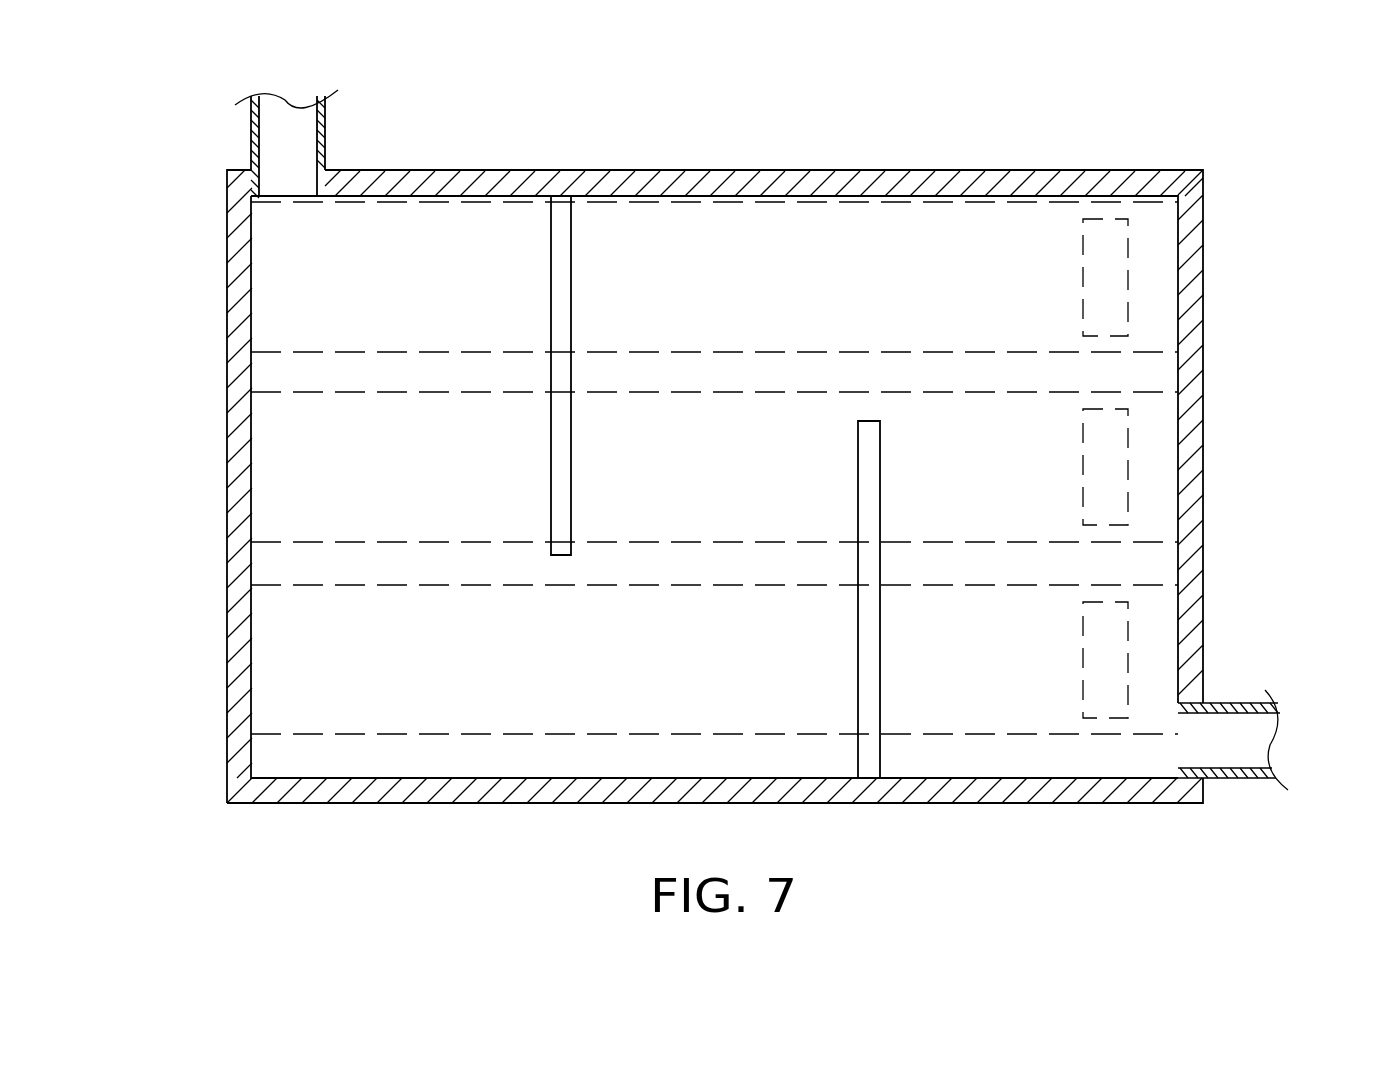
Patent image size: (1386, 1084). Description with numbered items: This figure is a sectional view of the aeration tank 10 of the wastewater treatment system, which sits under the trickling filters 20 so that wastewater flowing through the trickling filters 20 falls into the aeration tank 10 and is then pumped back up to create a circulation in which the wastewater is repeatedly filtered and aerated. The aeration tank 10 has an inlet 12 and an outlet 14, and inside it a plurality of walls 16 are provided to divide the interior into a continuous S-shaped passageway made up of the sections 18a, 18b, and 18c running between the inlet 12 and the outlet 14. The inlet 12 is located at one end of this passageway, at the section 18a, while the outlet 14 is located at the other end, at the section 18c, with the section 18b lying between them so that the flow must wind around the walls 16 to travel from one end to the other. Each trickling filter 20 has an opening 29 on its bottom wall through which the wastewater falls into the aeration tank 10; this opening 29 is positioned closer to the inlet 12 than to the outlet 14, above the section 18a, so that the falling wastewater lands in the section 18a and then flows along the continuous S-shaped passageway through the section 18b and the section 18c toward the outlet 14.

The aeration tank 10 is at (238, 385).
The inlet 12 is at (1243, 762).
The outlet 14 is at (272, 131).
The walls 16 is at (560, 290).
The section of continuous S-shaped passageway 18a is at (1020, 305).
The section of continuous S-shaped passageway 18b is at (690, 300).
The section of continuous S-shaped passageway 18c is at (355, 459).
The trickling filter 20 is at (1025, 395).
The opening 29 is at (1105, 305).